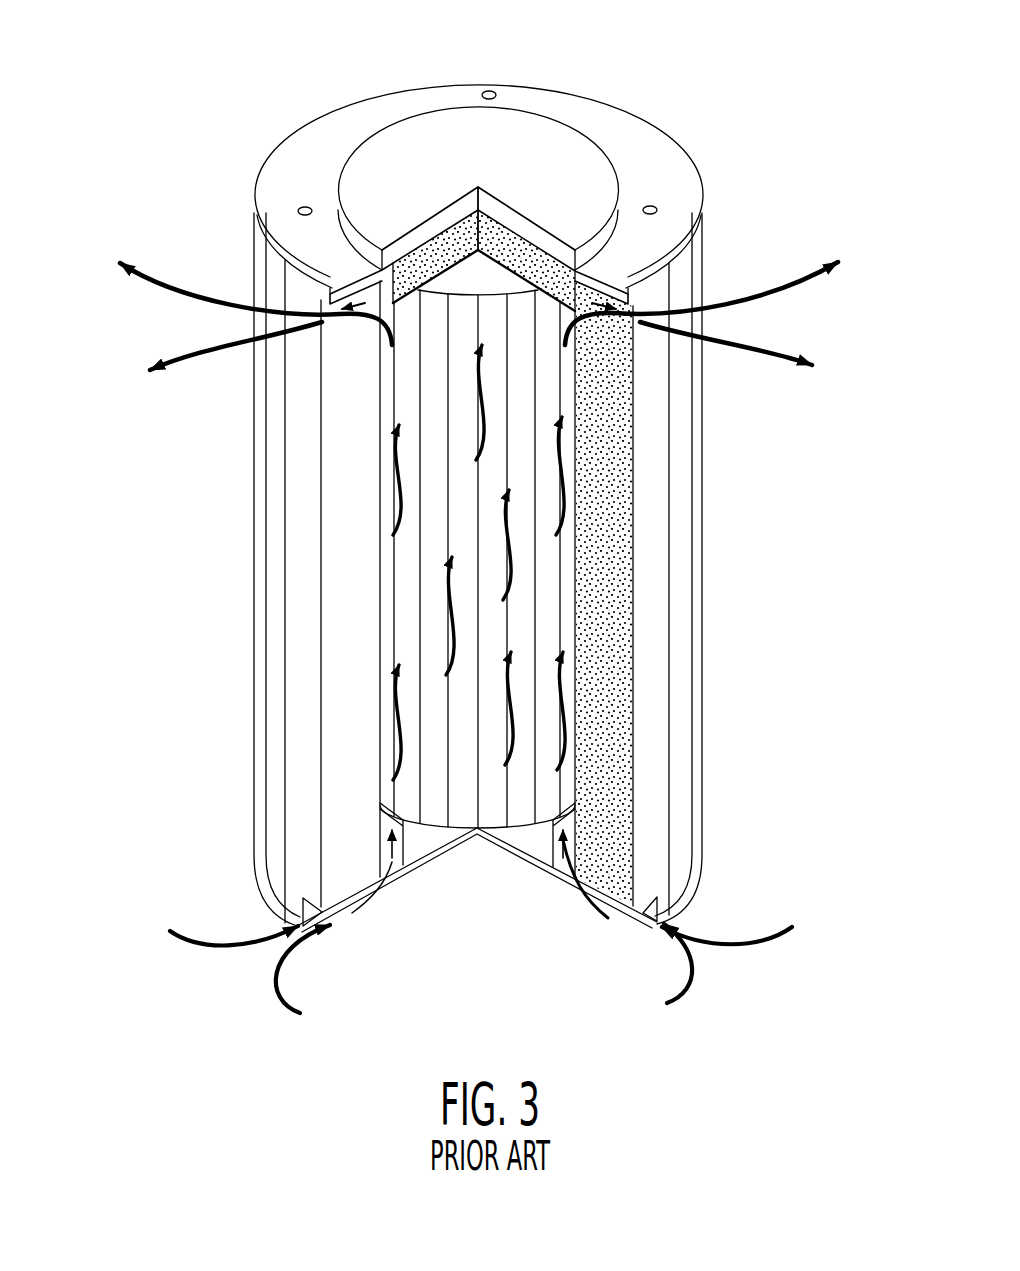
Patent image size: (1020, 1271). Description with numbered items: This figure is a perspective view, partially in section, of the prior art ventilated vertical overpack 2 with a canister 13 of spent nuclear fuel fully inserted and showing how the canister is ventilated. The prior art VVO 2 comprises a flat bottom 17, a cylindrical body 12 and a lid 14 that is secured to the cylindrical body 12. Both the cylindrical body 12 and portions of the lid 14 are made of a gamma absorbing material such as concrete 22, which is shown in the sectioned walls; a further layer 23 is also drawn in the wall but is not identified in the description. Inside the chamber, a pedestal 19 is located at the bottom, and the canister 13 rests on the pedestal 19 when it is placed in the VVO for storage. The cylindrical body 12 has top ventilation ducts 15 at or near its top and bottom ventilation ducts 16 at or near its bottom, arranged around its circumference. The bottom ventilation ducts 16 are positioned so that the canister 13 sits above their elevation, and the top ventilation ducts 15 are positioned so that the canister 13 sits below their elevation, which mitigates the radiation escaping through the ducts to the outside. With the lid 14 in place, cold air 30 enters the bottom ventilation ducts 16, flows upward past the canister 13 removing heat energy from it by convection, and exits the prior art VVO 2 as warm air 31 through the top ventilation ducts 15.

The ventilated vertical overpack 2 is at (831, 68).
The cylindrical body 12 is at (683, 540).
The canister 13 is at (547, 597).
The lid 14 is at (680, 212).
The top ventilation ducts 15 is at (296, 285).
The bottom ventilation ducts 16 is at (297, 920).
The flat bottom 17 is at (434, 852).
The pedestal 19 is at (445, 836).
The concrete 22 is at (553, 238).
The inner insulation layer 23 is at (565, 718).
The cold air 30 is at (776, 1023).
The warm air 31 is at (856, 357).